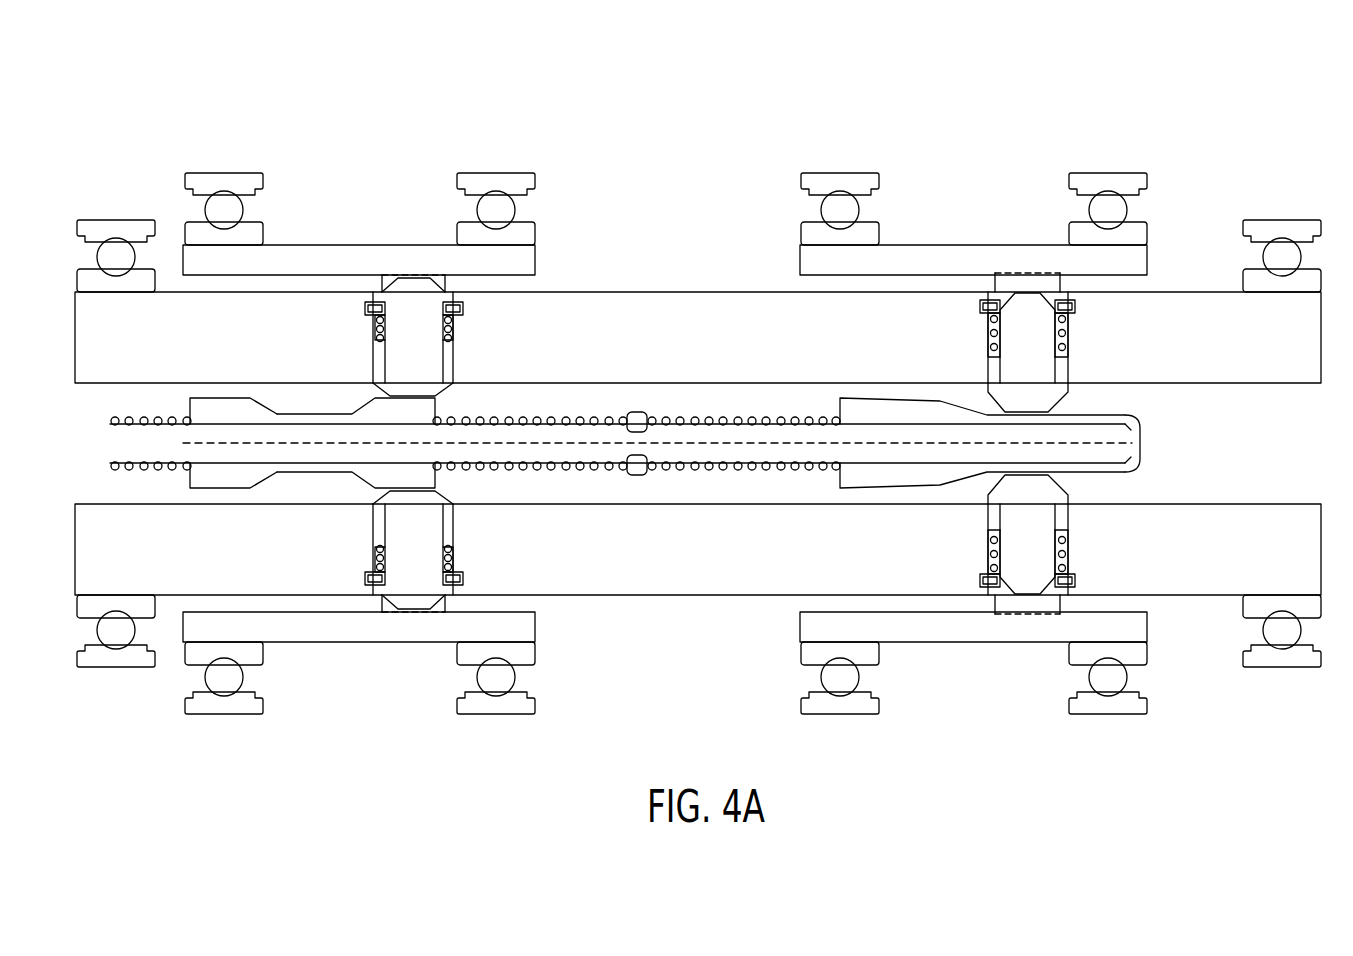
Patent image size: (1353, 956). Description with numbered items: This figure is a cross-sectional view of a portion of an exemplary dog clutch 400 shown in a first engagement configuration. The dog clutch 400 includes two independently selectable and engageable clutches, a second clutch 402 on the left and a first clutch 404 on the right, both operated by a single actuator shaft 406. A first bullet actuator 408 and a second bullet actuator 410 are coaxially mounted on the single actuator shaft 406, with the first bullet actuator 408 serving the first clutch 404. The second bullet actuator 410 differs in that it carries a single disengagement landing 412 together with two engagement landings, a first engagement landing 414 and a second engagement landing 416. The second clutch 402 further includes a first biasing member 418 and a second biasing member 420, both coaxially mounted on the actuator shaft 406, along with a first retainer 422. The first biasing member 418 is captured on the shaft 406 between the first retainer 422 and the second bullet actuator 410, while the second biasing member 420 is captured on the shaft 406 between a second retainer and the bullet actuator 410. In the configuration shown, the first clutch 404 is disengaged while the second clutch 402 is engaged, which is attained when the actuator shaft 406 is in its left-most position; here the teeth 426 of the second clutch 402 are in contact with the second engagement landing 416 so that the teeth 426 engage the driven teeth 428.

The dog clutch 400 is at (1276, 167).
The second clutch 402 is at (411, 195).
The first clutch 404 is at (1041, 189).
The actuator shaft 406 is at (1131, 443).
The first bullet actuator 408 is at (858, 475).
The second bullet actuator 410 is at (250, 480).
The disengagement landing 412 is at (305, 412).
The first engagement landing 414 is at (205, 397).
The second engagement landing 416 is at (375, 396).
The first biasing member 418 is at (567, 419).
The second biasing member 420 is at (122, 420).
The first retainer 422 is at (638, 412).
The teeth 426 is at (417, 315).
The driven teeth 428 is at (447, 280).